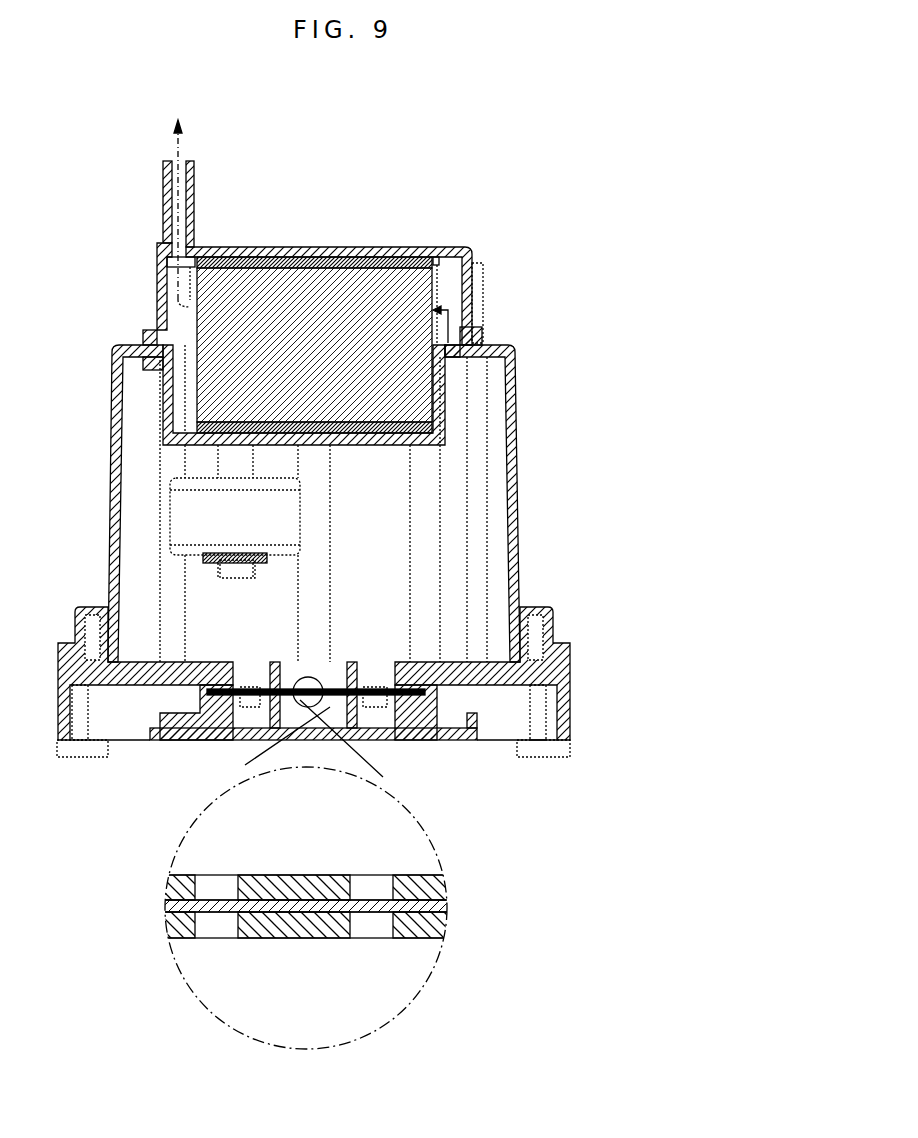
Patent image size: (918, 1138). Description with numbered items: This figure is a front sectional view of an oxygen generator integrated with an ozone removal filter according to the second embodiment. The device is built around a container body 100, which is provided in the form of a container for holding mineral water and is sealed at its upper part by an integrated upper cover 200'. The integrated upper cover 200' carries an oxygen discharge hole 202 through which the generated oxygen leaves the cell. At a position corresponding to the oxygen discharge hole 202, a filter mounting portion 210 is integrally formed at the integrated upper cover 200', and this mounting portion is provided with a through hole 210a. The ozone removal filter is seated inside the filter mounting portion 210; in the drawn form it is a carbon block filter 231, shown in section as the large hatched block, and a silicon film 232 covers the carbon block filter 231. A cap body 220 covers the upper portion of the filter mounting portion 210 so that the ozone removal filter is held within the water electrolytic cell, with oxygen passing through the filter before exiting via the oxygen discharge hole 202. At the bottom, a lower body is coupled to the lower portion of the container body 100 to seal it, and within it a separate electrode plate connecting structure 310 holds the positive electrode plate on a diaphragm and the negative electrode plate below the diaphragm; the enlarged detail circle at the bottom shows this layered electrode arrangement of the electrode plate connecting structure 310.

The container body 100 is at (518, 472).
The integrated upper cover 200' is at (99, 318).
The oxygen discharge hole 202 is at (193, 162).
The filter mounting portion 210 is at (252, 425).
The through hole 210a is at (452, 350).
The cap body 220 is at (310, 245).
The carbon block filter 231 is at (392, 293).
The silicon film 232 is at (360, 257).
The electrode plate connecting structure 310 is at (173, 740).